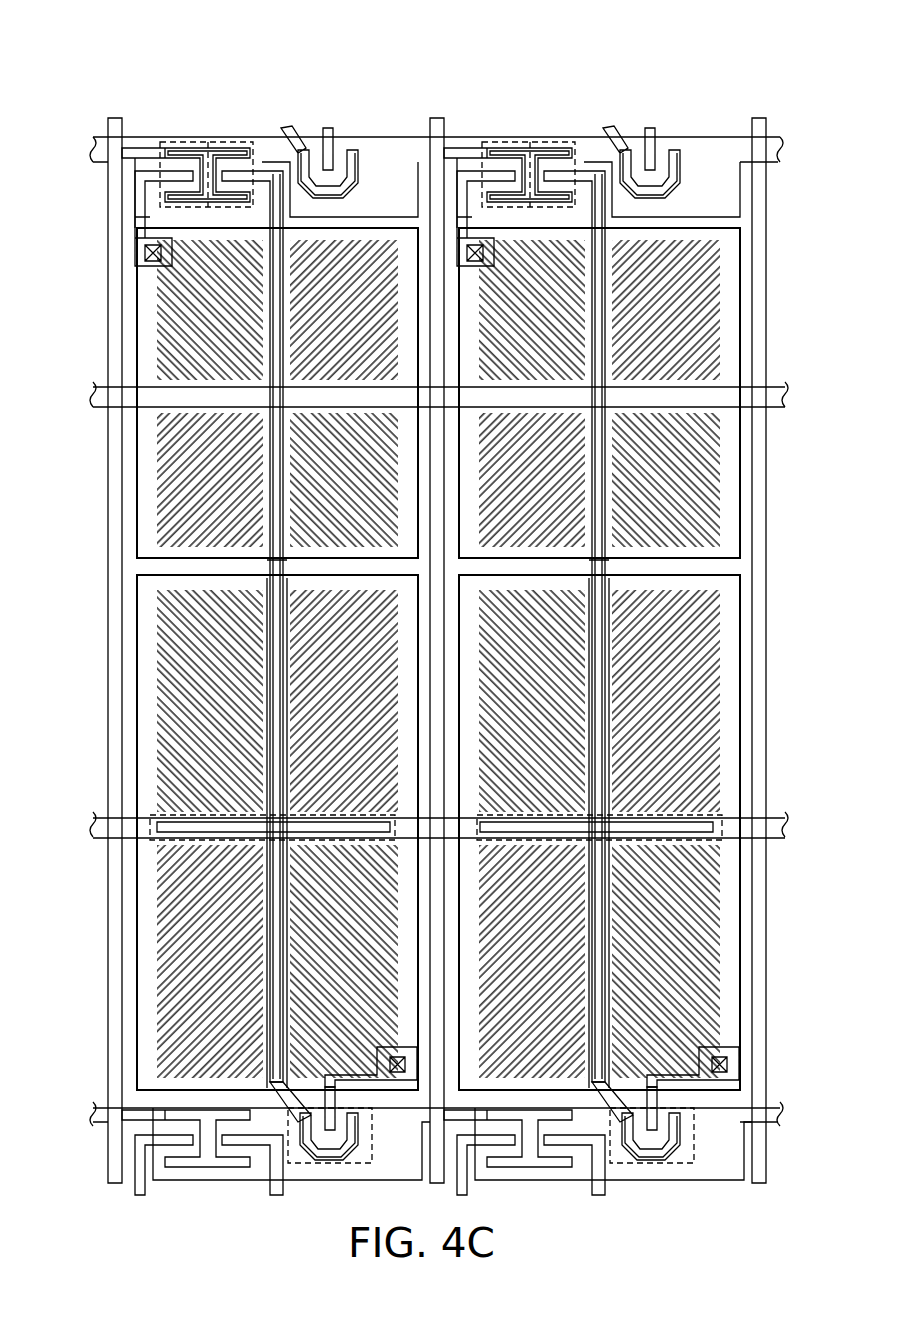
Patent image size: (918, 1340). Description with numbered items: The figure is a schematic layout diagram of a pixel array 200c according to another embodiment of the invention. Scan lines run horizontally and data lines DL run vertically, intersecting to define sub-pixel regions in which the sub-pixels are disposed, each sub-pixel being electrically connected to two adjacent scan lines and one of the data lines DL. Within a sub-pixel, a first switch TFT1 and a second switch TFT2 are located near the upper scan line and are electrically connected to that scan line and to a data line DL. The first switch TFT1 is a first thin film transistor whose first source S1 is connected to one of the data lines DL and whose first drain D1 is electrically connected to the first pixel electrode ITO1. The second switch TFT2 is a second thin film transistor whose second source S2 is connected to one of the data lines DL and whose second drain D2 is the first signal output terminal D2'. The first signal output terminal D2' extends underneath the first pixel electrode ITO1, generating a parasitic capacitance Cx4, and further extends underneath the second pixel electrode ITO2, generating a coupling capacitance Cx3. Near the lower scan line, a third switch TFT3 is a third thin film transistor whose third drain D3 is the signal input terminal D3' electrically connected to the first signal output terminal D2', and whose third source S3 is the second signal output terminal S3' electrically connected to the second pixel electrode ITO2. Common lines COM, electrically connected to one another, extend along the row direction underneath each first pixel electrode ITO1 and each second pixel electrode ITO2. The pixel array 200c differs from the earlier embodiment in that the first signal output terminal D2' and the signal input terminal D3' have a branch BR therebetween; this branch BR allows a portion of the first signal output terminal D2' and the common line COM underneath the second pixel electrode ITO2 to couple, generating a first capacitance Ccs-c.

The data lines DL is at (312, 36).
The first switch TFT1 is at (183, 136).
The second switch TFT2 is at (228, 134).
The third switch TFT3 is at (352, 1165).
The first source S1 is at (190, 150).
The second source S2 is at (250, 158).
The third source S3 is at (327, 1160).
The second signal output terminal S3' is at (371, 1132).
The first drain D1 is at (135, 188).
The second drain D2 is at (319, 143).
The first signal output terminal D2' is at (171, 626).
The third drain D3 is at (314, 1154).
The signal input terminal D3' is at (171, 991).
The parasitic capacitance Cx4 is at (235, 232).
The coupling capacitance Cx3 is at (208, 690).
The common lines COM is at (143, 398).
The first pixel electrode ITO1 is at (152, 428).
The second pixel electrode ITO2 is at (157, 625).
The first capacitance Ccs-c is at (730, 808).
The branch BR is at (715, 834).
The pixel array 200c is at (773, 1221).